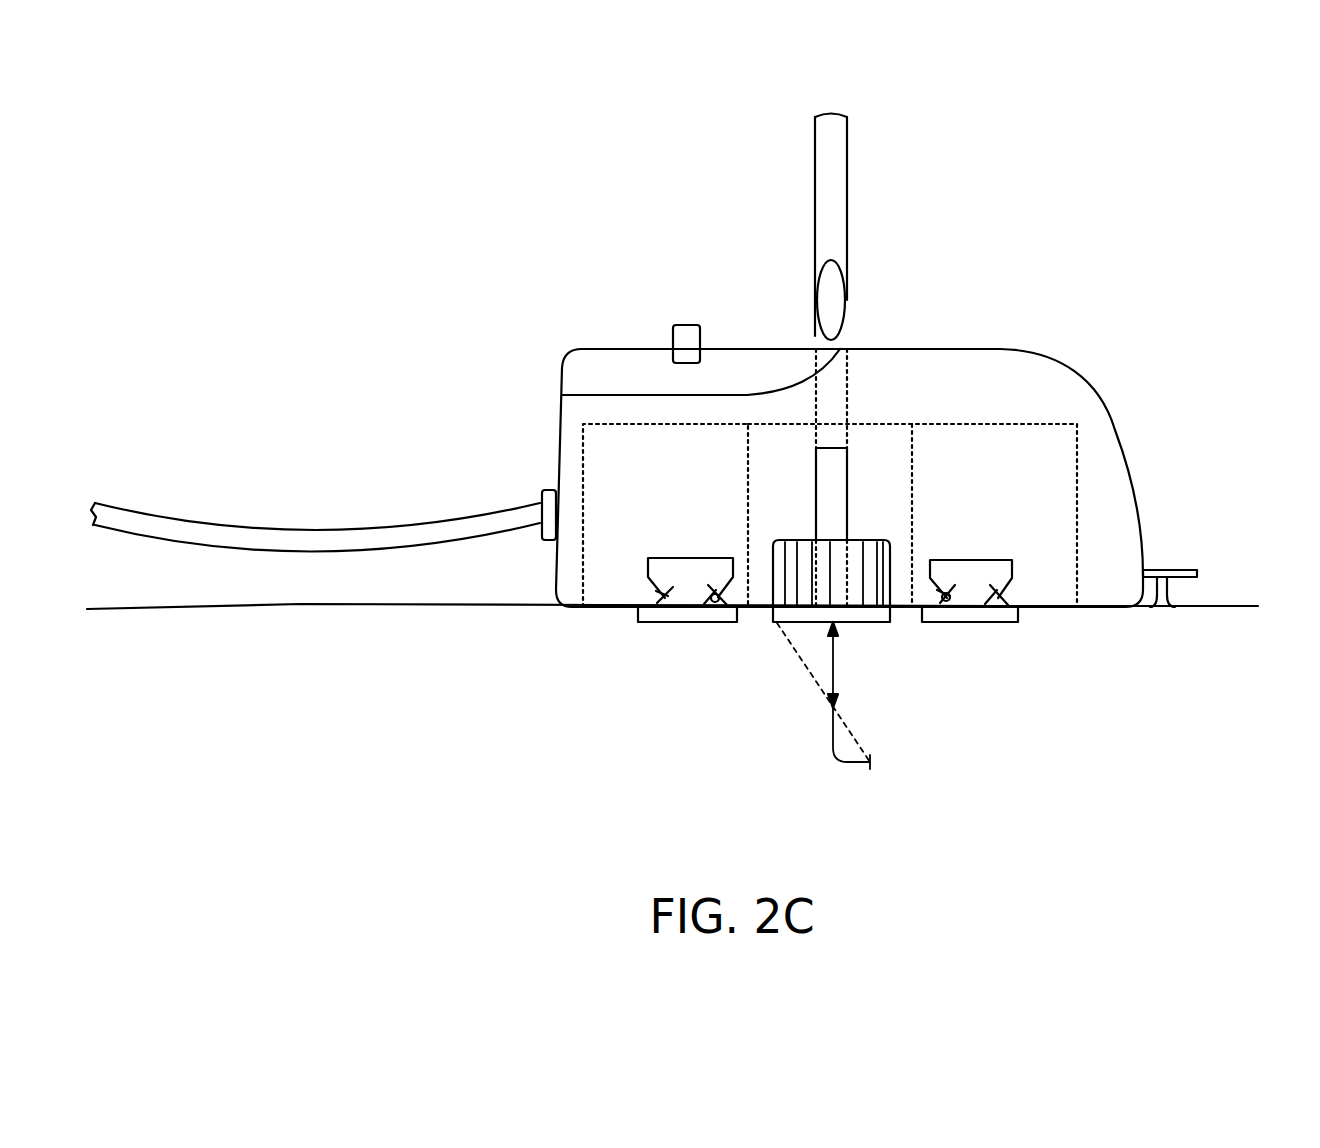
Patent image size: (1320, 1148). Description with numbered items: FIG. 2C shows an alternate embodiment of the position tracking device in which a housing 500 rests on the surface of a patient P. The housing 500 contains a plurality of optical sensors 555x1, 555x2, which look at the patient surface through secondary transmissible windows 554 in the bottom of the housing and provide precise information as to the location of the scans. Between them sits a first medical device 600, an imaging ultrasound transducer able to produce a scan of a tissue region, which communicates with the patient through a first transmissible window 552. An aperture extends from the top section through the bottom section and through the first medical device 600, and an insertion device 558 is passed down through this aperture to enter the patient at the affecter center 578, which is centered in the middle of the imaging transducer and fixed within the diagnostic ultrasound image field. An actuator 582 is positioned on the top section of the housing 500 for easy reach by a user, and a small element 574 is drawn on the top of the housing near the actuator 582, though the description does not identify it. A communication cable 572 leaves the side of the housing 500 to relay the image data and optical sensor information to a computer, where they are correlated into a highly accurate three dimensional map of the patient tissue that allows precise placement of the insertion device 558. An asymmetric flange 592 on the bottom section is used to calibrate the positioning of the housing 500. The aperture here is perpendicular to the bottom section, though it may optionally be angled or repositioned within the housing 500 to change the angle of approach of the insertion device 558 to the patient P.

The housing 500 is at (1131, 446).
The first transmissible window 552 is at (877, 614).
The secondary transmissible window 554 is at (687, 614).
The optical sensor 555x1 is at (665, 515).
The optical sensor 555x2 is at (912, 515).
The insertion device 558 is at (828, 202).
The communication cable 572 is at (317, 530).
The button / connector 574 is at (683, 325).
The affecter center 578 is at (827, 708).
The actuator 582 is at (600, 387).
The asymmetric flange 592 is at (1163, 582).
The first medical device 600 is at (880, 540).
The patient P is at (1228, 702).